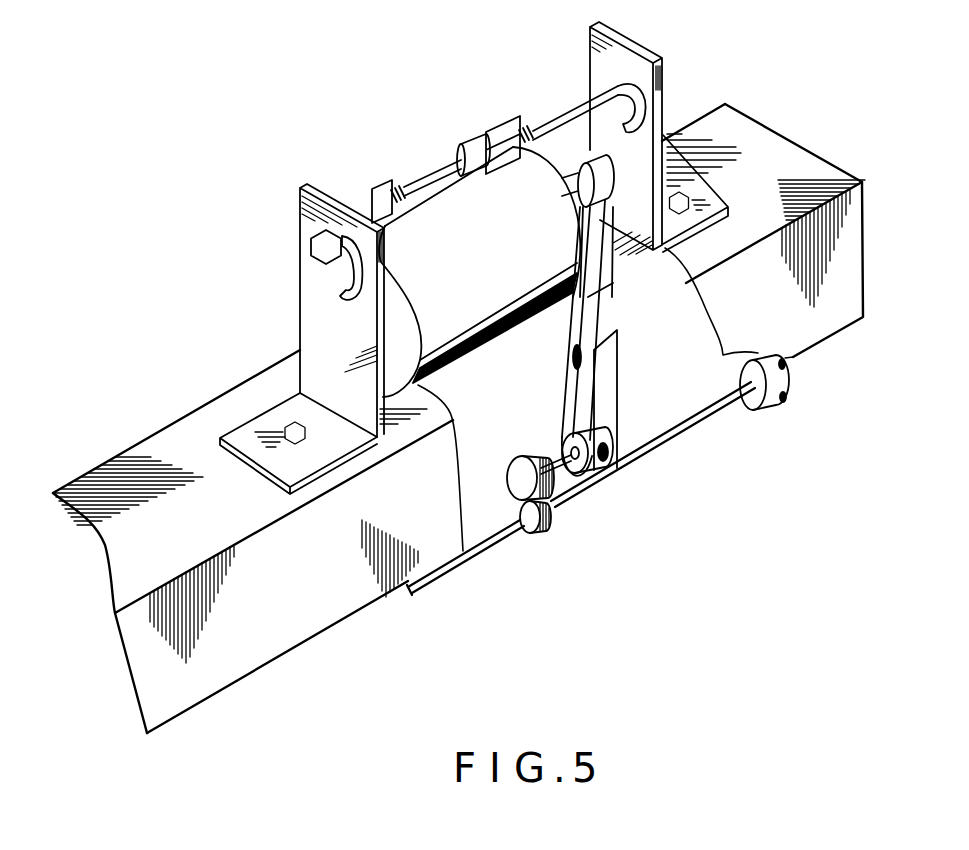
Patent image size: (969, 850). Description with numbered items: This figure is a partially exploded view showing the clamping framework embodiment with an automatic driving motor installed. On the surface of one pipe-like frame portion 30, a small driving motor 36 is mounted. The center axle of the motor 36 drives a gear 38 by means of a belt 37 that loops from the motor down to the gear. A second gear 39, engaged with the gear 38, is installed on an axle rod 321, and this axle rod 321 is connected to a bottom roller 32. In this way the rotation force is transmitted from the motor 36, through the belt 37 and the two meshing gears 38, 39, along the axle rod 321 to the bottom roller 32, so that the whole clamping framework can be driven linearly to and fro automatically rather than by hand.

The pipe-like frame portion 30 is at (350, 597).
The bottom roller 32 is at (787, 400).
The axle rod 321 is at (646, 455).
The driving motor 36 is at (437, 183).
The belt 37 is at (604, 291).
The gear 38 is at (552, 492).
The gear 39 is at (547, 525).